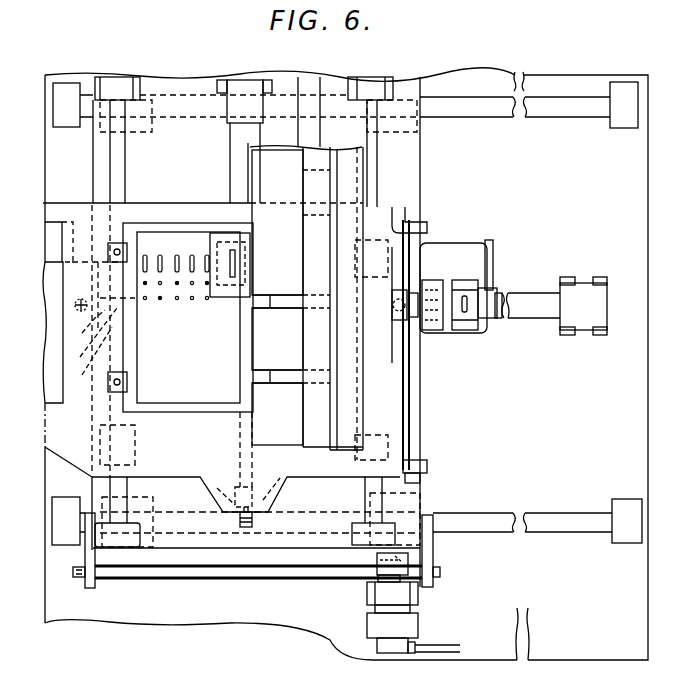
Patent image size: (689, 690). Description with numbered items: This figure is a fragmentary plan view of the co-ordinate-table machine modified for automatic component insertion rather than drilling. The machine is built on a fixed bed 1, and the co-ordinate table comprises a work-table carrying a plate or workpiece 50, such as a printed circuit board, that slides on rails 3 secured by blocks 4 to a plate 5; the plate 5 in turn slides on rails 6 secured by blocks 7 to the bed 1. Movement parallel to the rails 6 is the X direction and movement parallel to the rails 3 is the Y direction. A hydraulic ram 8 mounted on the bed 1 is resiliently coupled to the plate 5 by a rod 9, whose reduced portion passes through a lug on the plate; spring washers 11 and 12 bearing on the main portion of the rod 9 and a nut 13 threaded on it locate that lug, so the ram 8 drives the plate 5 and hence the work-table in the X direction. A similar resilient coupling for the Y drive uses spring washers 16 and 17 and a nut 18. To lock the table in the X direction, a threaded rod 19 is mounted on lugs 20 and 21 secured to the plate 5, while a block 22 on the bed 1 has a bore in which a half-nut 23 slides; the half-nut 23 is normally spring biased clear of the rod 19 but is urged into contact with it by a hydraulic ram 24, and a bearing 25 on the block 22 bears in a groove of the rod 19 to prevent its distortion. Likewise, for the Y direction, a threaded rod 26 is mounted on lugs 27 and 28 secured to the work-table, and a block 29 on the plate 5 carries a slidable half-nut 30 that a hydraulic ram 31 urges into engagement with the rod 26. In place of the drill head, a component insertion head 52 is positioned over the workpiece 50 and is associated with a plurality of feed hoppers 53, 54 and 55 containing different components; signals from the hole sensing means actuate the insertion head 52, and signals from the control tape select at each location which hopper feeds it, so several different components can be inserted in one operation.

The fixed bed 1 is at (582, 193).
The rails 3 is at (118, 152).
The blocks 4 is at (137, 88).
The plate 5 is at (420, 182).
The rails 6 is at (505, 112).
The blocks 7 is at (57, 128).
The hydraulic ram 8 is at (520, 318).
The rod 9 is at (90, 359).
The spring washer 11 is at (87, 338).
The spring washer 12 is at (82, 329).
The nut 13 is at (98, 341).
The spring washer 16 is at (255, 495).
The spring washer 17 is at (252, 515).
The nut 18 is at (238, 517).
The threaded rod 19 is at (193, 575).
The lug 20 is at (85, 557).
The lug 21 is at (430, 542).
The block 22 is at (404, 607).
The half-nut 23 is at (377, 574).
The hydraulic ram 24 is at (412, 628).
The bearing 25 is at (377, 557).
The threaded rod 26 is at (413, 392).
The lug 27 is at (421, 466).
The lug 28 is at (425, 229).
The block 29 is at (447, 283).
The half-nut 30 is at (405, 305).
The hydraulic ram 31 is at (490, 300).
The plate or workpiece 50 is at (203, 348).
The component insertion head 52 is at (214, 231).
The feed hopper 53 is at (292, 276).
The feed hopper 54 is at (292, 349).
The feed hopper 55 is at (292, 423).